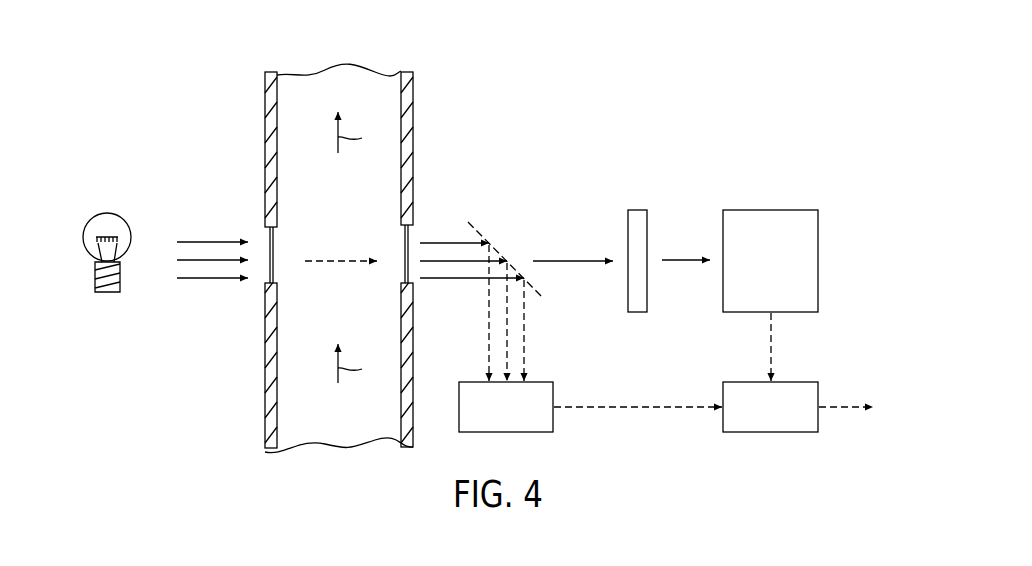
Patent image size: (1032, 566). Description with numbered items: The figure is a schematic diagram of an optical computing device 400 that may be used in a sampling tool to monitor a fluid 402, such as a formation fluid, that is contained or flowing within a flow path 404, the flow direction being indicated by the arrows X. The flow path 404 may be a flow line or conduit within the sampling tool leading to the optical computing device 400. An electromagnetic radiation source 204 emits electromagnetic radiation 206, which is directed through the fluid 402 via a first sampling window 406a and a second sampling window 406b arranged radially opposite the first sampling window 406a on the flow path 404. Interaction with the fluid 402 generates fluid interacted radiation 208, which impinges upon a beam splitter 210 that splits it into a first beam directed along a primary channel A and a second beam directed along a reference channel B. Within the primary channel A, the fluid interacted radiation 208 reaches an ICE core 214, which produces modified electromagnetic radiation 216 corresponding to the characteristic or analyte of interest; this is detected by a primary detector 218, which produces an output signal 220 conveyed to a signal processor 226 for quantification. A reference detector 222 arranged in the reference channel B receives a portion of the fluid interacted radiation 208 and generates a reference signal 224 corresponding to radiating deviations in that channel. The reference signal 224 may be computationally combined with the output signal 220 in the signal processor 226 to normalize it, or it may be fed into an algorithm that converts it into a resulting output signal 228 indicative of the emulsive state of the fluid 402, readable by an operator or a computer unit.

The optical computing device 400 is at (147, 37).
The electromagnetic radiation source 204 is at (100, 213).
The electromagnetic radiation 206 is at (203, 241).
The fluid 402 is at (358, 221).
The flow path 404 is at (409, 102).
The first sampling window 406a is at (270, 283).
The second sampling window 406b is at (408, 282).
The fluid interacted radiation 208 is at (443, 242).
The beam splitter 210 is at (468, 222).
The primary channel A is at (537, 233).
The reference channel B is at (540, 340).
The ICE core 214 is at (628, 297).
The modified electromagnetic radiation 216 is at (682, 258).
The primary detector 218 is at (788, 274).
The output signal 220 is at (772, 322).
The reference detector 222 is at (525, 419).
The reference signal 224 is at (588, 408).
The signal processor 226 is at (788, 419).
The resulting output signal 228 is at (828, 405).